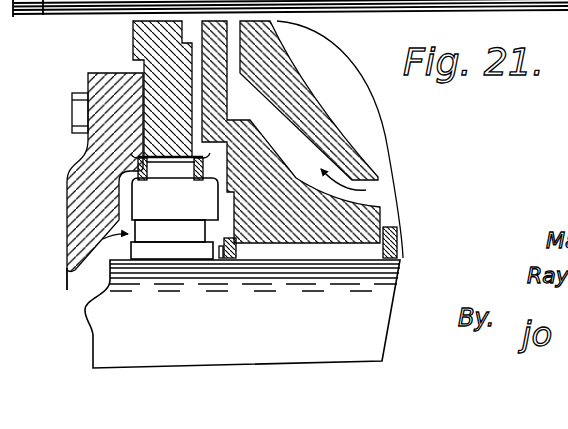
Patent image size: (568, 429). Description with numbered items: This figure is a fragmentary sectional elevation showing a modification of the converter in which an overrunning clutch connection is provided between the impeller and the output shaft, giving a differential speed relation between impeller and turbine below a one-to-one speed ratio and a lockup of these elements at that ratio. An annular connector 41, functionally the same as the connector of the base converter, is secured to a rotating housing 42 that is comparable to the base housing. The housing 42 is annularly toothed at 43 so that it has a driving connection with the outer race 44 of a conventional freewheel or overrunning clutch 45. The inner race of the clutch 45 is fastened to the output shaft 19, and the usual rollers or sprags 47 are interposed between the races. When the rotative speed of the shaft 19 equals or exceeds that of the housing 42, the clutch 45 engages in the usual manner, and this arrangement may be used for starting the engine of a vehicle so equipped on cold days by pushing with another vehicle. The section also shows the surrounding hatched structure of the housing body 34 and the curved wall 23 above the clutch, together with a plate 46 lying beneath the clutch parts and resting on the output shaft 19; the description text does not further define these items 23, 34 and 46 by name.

The output shaft 19 is at (256, 328).
The curved shroud wall 23 is at (290, 61).
The housing body 34 is at (248, 135).
The annular connector 41 is at (69, 220).
The rotating housing 42 is at (140, 42).
The annular toothing 43 is at (197, 150).
The outer race 44 is at (182, 205).
The overrunning clutch 45 is at (110, 248).
The plate 46 is at (172, 251).
The rollers or sprags 47 is at (170, 232).